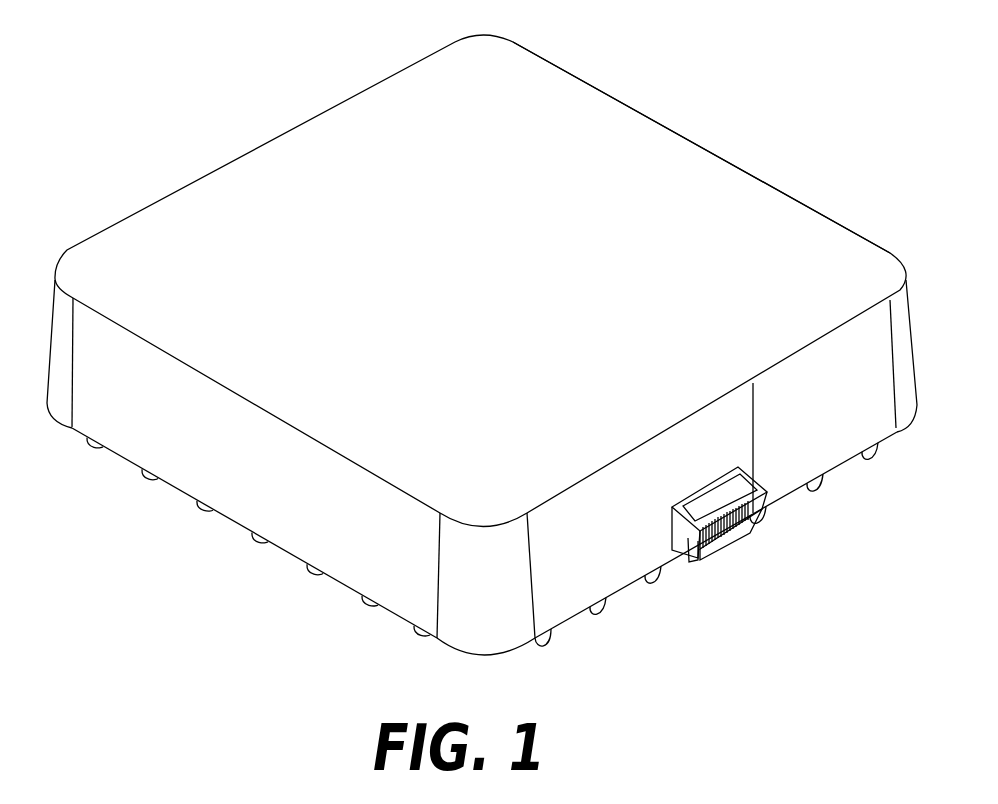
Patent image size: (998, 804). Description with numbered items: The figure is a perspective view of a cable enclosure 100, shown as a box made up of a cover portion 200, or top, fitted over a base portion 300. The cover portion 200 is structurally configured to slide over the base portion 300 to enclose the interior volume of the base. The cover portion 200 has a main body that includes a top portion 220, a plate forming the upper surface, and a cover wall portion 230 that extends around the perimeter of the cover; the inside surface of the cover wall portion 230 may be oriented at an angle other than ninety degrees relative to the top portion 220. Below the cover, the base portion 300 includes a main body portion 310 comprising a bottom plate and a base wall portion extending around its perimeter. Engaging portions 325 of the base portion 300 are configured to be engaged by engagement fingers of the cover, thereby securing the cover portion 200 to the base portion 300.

The enclosure 100 is at (691, 93).
The cover portion 200 is at (381, 93).
The top portion 220 is at (803, 212).
The cover wall portion 230 is at (882, 365).
The base portion 300 is at (597, 608).
The main body portion 310 is at (815, 490).
The engaging portions 325 is at (732, 515).